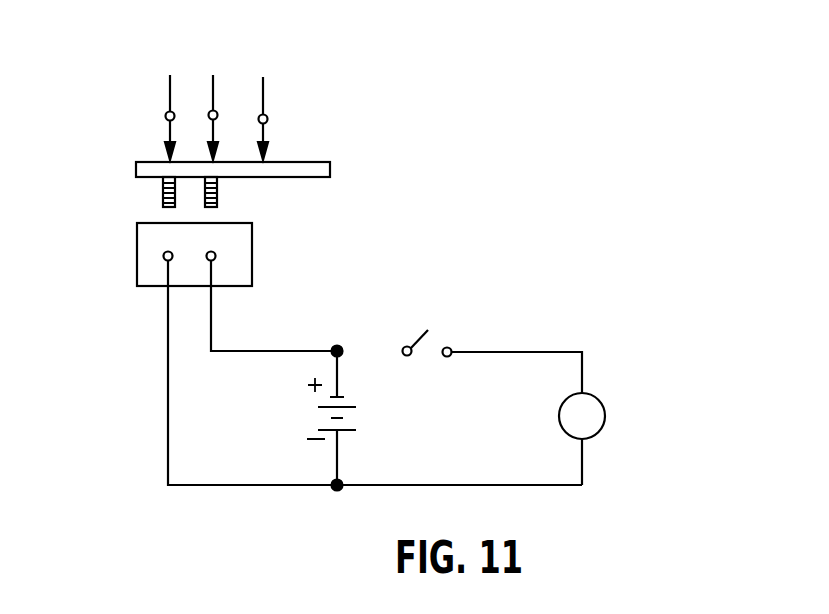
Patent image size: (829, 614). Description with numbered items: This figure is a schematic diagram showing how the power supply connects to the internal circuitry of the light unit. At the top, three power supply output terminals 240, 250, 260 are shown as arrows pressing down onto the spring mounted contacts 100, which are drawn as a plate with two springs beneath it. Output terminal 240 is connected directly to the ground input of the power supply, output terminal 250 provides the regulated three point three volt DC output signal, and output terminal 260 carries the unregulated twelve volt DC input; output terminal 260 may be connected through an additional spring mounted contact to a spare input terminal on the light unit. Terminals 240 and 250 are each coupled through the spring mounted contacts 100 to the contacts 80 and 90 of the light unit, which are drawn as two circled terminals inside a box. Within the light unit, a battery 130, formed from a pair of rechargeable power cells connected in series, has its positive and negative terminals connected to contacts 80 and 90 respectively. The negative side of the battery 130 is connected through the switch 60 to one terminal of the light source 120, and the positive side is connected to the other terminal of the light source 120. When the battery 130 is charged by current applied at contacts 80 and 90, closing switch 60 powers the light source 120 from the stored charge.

The switch 60 is at (433, 342).
The contact 80 is at (163, 255).
The contact 90 is at (215, 254).
The spring mounted contacts 100 is at (163, 187).
The light source 120 is at (598, 398).
The battery 130 is at (356, 415).
The output terminal 240 is at (165, 114).
The output terminal 250 is at (209, 112).
The output terminal 260 is at (268, 118).